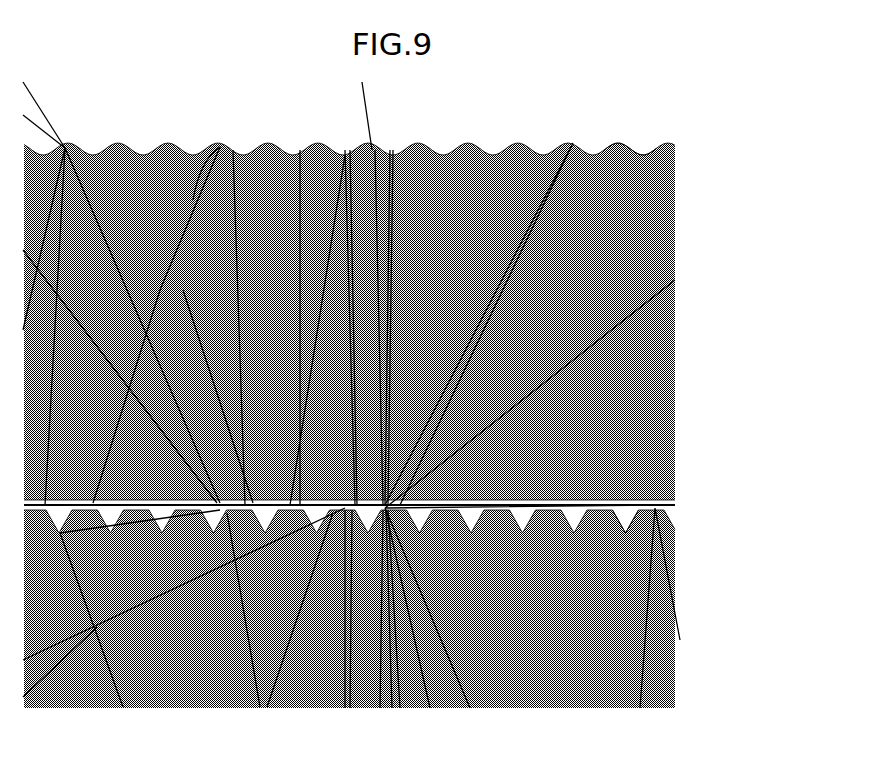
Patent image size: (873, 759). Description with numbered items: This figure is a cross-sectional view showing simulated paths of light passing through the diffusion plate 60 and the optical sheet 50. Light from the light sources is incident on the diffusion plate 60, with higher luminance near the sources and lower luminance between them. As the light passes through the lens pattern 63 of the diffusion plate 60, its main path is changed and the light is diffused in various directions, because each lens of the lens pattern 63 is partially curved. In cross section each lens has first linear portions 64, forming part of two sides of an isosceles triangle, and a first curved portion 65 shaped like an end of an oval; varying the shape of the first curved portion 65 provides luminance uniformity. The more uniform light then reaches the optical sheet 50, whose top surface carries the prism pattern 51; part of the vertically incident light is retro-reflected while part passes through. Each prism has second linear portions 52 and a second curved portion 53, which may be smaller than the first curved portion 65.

The optical sheet 50 is at (657, 328).
The prism pattern 51 is at (747, 118).
The second linear portions 52 is at (640, 145).
The second curved portion 53 is at (617, 136).
The diffusion plate 60 is at (650, 623).
The lens pattern 63 is at (747, 486).
The first linear portions 64 is at (625, 520).
The first curved portion 65 is at (603, 505).